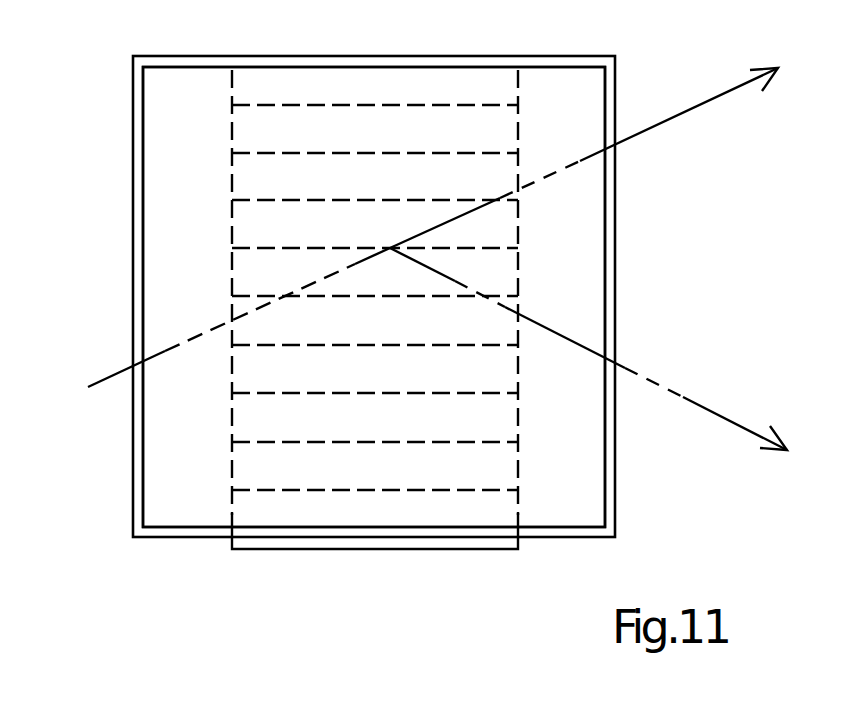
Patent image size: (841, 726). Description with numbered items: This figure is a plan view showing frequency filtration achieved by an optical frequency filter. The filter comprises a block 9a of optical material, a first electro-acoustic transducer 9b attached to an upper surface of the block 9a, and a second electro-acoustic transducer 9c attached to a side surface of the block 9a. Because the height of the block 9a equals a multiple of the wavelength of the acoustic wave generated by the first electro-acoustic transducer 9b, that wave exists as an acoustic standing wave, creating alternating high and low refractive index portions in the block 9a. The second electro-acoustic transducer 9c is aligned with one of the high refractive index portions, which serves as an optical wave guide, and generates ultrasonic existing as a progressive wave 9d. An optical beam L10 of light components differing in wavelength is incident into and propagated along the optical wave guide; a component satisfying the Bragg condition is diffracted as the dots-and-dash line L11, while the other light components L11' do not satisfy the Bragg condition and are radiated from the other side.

The block of optical material 9a is at (619, 283).
The first electro-acoustic transducer 9b is at (583, 80).
The second electro-acoustic transducer 9c is at (407, 550).
The progressive wave 9d is at (375, 152).
The optical beam L10 is at (105, 378).
The diffracted light component L11 is at (588, 349).
The other light components L11' is at (584, 158).